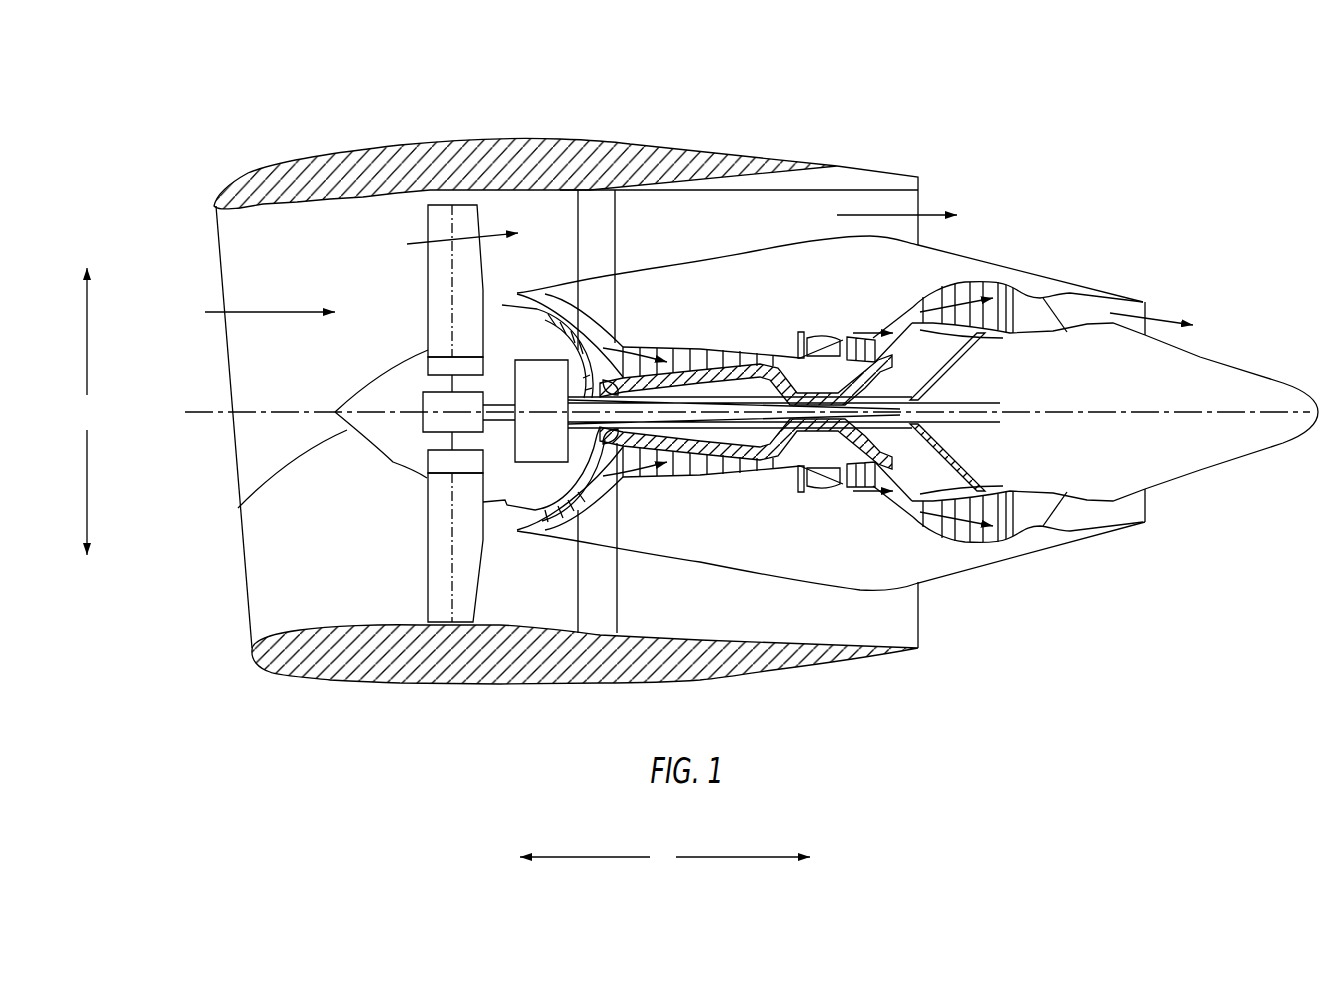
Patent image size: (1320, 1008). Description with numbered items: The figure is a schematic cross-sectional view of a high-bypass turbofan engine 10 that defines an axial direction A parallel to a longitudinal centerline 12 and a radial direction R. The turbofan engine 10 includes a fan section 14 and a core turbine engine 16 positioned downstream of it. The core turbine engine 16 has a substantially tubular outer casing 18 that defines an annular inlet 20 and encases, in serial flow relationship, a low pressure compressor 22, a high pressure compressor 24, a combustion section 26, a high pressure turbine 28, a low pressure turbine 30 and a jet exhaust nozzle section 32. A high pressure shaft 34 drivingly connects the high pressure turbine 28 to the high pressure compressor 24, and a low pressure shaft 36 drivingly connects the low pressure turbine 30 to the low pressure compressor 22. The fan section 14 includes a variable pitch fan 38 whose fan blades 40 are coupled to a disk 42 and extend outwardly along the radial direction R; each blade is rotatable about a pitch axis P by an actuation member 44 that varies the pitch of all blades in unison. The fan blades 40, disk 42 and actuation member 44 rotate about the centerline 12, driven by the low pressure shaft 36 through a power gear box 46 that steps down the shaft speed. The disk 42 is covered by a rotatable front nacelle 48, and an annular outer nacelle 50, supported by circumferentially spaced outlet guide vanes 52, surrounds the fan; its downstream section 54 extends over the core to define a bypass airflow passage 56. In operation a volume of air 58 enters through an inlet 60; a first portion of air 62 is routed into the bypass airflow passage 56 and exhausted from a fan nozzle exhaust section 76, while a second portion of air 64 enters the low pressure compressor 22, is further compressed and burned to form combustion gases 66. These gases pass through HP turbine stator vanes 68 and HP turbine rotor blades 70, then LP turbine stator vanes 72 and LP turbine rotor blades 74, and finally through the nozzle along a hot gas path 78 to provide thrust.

The turbofan engine 10 is at (1063, 157).
The longitudinal centerline 12 is at (1085, 408).
The fan section 14 is at (468, 108).
The core turbine engine 16 is at (787, 305).
The outer casing 18 is at (773, 577).
The annular inlet 20 is at (520, 520).
The low pressure compressor 22 is at (570, 475).
The high pressure compressor 24 is at (645, 465).
The combustion section 26 is at (817, 485).
The high pressure turbine 28 is at (967, 465).
The low pressure turbine 30 is at (1002, 537).
The jet exhaust nozzle section 32 is at (1063, 520).
The high pressure shaft 34 is at (853, 373).
The low pressure shaft 36 is at (967, 373).
The variable pitch fan 38 is at (393, 465).
The fan blades 40 is at (427, 563).
The disk 42 is at (447, 367).
The actuation member 44 is at (427, 397).
The power gear box 46 is at (577, 342).
The front nacelle 48 is at (240, 507).
The outer nacelle 50 is at (473, 687).
The outlet guide vanes 52 is at (615, 220).
The downstream section 54 is at (837, 163).
The bypass airflow passage 56 is at (716, 240).
The volume of air 58 is at (267, 308).
The inlet 60 is at (247, 630).
The first portion of air 62 is at (443, 231).
The second portion of air 64 is at (508, 302).
The combustion gases 66 is at (863, 340).
The HP turbine stator vanes 68 is at (833, 485).
The HP turbine rotor blades 70 is at (943, 437).
The LP turbine stator vanes 72 is at (923, 527).
The LP turbine rotor blades 74 is at (937, 527).
The fan nozzle exhaust section 76 is at (907, 200).
The hot gas path 78 is at (907, 310).
The pitch axis P is at (452, 217).
The axial direction A is at (665, 857).
The radial direction R is at (86, 411).